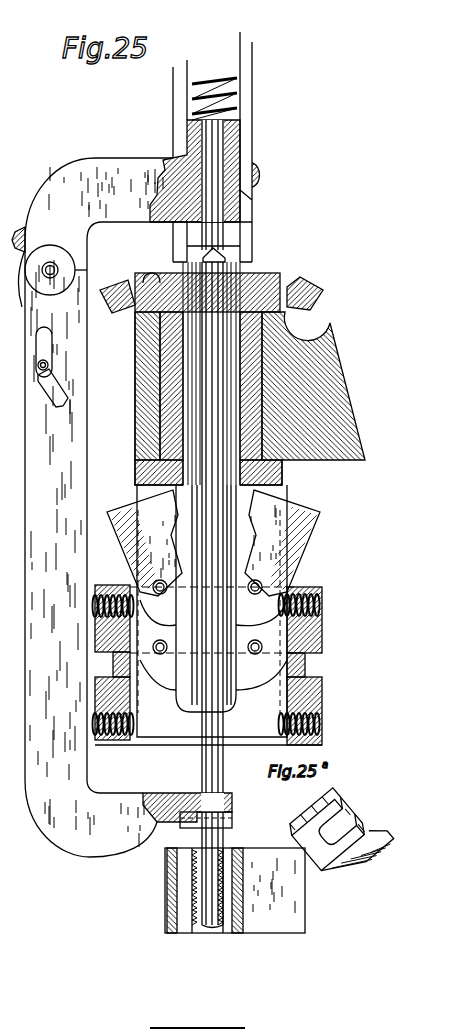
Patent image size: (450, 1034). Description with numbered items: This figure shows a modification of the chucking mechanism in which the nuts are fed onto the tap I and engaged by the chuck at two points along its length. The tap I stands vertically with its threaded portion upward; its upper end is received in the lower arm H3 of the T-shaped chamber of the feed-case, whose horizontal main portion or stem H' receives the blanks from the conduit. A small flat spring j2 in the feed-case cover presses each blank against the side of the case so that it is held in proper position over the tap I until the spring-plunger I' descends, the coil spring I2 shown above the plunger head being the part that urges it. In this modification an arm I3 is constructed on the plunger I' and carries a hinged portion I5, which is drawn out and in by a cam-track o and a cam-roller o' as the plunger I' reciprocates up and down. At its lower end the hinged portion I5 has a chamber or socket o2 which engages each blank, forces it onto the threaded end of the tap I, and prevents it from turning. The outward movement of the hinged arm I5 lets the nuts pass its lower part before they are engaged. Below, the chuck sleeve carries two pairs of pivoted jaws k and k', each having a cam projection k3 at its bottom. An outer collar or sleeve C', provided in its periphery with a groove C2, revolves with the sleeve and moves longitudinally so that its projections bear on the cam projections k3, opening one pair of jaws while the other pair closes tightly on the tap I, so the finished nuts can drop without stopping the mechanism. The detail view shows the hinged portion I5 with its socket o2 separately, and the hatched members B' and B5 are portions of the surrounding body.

In FIG. 25, the tap I is at (207, 551).
In FIG. 25, the spring-plunger I' is at (225, 170).
In FIG. 25, the spring I2 is at (213, 78).
In FIG. 25, the arm I3 is at (95, 207).
In FIG. 25, the hinged portion I5 is at (58, 582).
In FIG. 25A, the hinged portion I5 is at (372, 797).
In FIG. 25, the main portion or stem of the T-shaped chamber H' is at (208, 890).
In FIG. 25, the lower arm of the T-shaped chamber H3 is at (187, 115).
In FIG. 25, the small flat spring j2 is at (269, 195).
In FIG. 25, the body block B' is at (250, 398).
In FIG. 25, the wedge pieces B5 is at (225, 282).
In FIG. 25, the cam-track o is at (74, 388).
In FIG. 25, the cam-roller o' is at (75, 352).
In FIG. 25, the chamber or socket o2 is at (232, 817).
In FIG. 25A, the chamber or socket o2 is at (356, 904).
In FIG. 25, the jaws k is at (213, 601).
In FIG. 25, the jaws k' is at (208, 615).
In FIG. 25, the cam projection k3 is at (340, 643).
In FIG. 25, the outer collar or sleeve C' is at (225, 619).
In FIG. 25, the groove C2 is at (313, 668).